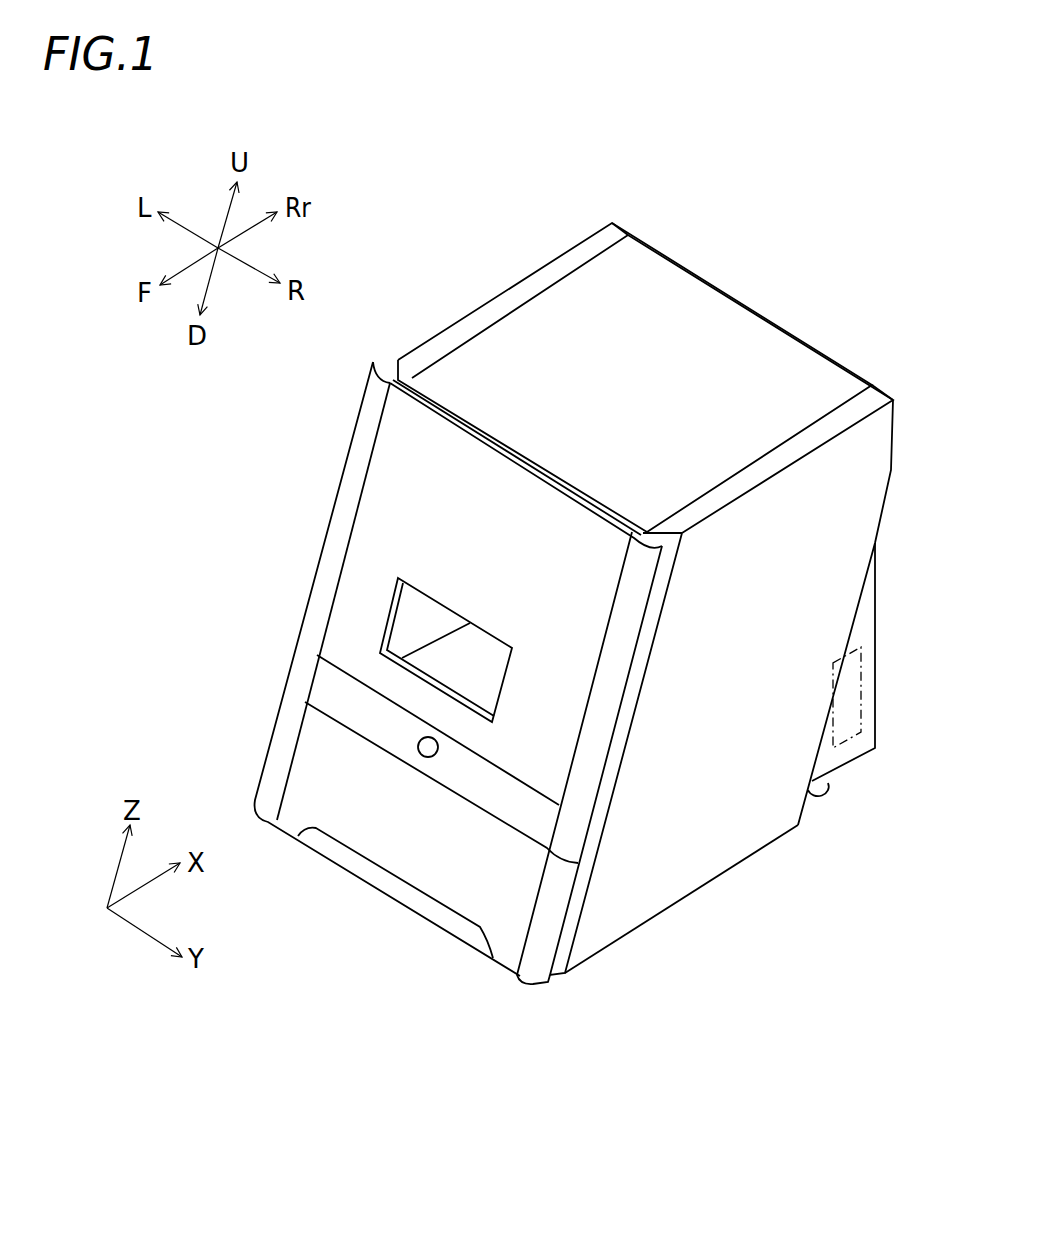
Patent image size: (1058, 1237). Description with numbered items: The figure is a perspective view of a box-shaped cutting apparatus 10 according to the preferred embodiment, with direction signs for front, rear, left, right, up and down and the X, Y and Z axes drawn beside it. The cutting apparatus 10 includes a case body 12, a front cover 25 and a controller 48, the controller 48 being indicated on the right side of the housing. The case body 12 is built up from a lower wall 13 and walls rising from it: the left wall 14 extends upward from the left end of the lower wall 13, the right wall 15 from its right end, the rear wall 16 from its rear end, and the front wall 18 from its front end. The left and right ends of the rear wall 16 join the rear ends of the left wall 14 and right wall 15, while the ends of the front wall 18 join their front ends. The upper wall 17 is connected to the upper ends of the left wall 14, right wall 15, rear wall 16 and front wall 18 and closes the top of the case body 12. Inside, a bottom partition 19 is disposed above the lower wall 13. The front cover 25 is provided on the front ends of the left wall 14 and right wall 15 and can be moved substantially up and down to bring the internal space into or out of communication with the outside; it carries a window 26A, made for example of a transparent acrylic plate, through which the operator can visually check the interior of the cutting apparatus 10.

The cutting apparatus 10 is at (515, 217).
The case body 12 is at (650, 920).
The lower wall 13 is at (430, 907).
The left wall 14 is at (427, 610).
The right wall 15 is at (703, 853).
The rear wall 16 is at (807, 335).
The upper wall 17 is at (698, 305).
The front wall 18 is at (517, 803).
The bottom partition 19 is at (467, 675).
The front cover 25 is at (390, 677).
The window 26A is at (385, 627).
The controller 48 is at (861, 703).